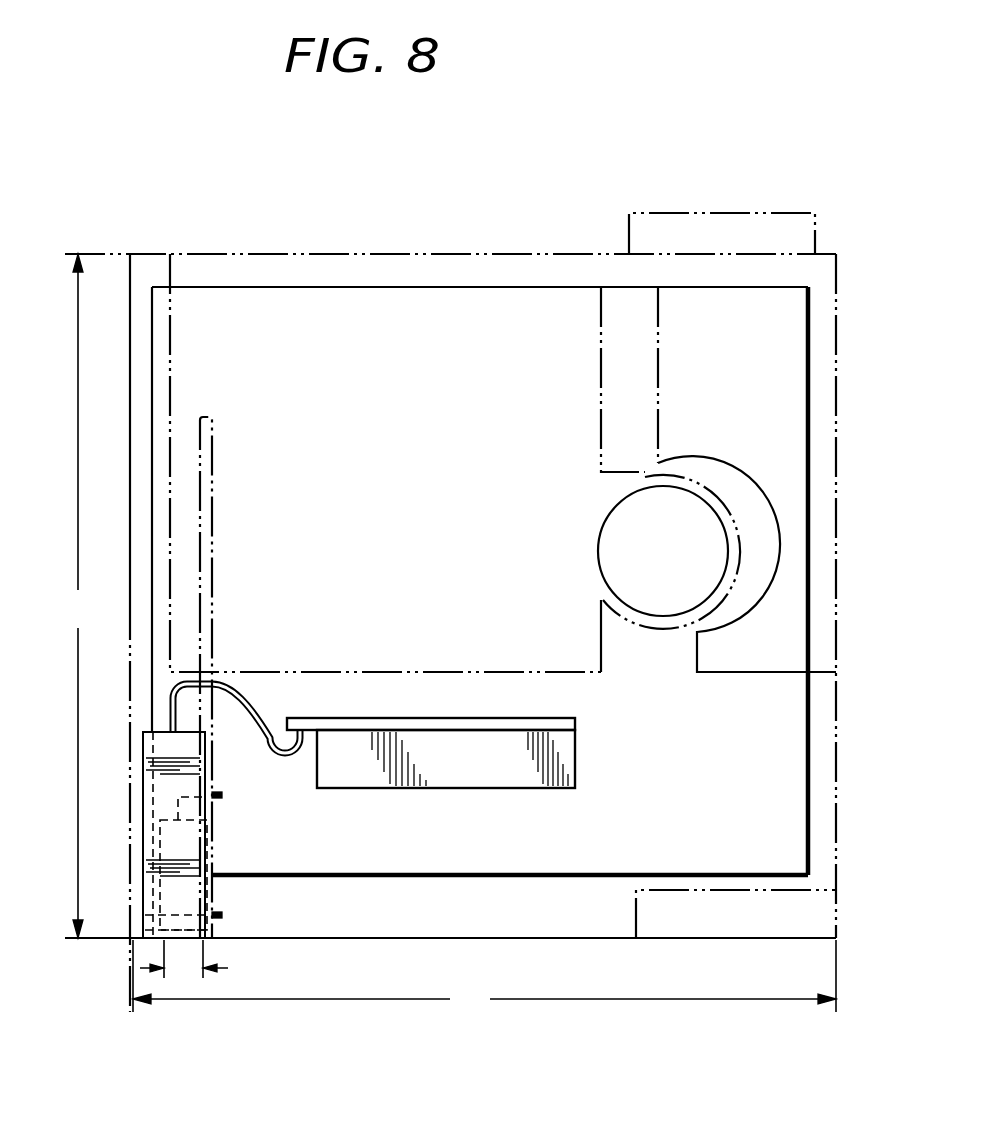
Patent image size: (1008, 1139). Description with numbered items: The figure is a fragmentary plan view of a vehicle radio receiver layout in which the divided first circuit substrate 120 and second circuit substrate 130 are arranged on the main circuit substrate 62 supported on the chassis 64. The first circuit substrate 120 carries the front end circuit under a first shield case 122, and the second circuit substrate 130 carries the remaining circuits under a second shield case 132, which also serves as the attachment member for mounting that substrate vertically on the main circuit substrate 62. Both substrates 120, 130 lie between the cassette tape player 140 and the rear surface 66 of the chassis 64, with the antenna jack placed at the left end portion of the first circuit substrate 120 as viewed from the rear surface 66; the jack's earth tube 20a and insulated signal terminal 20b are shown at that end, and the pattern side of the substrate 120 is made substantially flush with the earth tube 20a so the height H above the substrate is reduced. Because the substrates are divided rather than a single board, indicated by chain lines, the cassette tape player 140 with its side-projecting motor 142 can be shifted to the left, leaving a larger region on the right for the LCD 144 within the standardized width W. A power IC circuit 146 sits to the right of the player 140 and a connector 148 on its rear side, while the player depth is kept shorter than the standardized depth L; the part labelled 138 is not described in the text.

The earth tube 20a is at (160, 890).
The signal terminal 20b is at (222, 780).
The main circuit substrate 62 is at (578, 876).
The chassis 64 is at (837, 830).
The rear surface of the chassis 66 is at (470, 938).
The first circuit substrate 120 is at (215, 747).
The first shield case 122 is at (143, 790).
The second circuit substrate 130 is at (226, 602).
The second shield case 132 is at (560, 773).
The spring hook 138 is at (262, 712).
The cassette tape player 140 is at (170, 488).
The motor 142 is at (622, 538).
The LCD 144 is at (733, 213).
The power IC circuit 146 is at (718, 673).
The connector 148 is at (800, 920).
The depth L is at (75, 596).
The width W is at (484, 977).
The height H is at (184, 959).